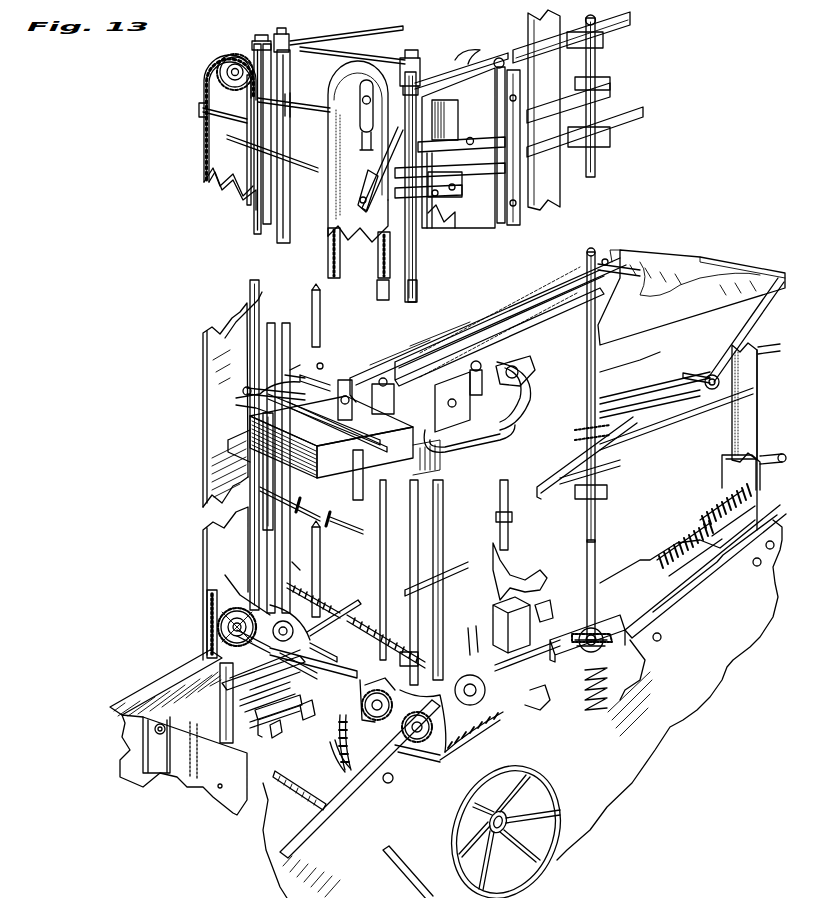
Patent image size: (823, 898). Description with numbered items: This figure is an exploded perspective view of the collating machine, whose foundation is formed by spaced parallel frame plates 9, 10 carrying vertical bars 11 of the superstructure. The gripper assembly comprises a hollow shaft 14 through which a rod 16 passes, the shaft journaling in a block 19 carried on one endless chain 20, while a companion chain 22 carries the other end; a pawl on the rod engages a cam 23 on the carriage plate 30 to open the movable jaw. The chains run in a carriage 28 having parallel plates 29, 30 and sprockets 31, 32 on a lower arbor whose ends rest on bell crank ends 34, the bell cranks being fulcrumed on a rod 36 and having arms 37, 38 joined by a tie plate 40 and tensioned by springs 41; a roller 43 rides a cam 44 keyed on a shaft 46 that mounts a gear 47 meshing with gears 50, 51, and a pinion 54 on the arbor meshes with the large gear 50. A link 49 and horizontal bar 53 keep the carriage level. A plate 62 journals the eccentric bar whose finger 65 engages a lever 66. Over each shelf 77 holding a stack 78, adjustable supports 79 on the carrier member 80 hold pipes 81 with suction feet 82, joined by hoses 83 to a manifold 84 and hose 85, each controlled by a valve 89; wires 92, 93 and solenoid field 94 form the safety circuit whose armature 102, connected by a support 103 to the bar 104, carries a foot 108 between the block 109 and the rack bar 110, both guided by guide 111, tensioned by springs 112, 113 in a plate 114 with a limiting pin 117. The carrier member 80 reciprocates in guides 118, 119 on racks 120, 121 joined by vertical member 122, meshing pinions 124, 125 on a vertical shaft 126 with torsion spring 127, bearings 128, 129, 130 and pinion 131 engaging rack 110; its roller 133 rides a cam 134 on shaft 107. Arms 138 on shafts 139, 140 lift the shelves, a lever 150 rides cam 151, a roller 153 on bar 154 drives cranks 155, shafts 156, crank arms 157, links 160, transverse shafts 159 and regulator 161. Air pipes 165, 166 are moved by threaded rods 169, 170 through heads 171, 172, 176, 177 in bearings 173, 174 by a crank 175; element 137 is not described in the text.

The frame plate 9 is at (678, 712).
The frame plate 10 is at (124, 756).
The vertical bar 11 is at (556, 18).
The hollow shaft 14 is at (292, 136).
The rod 16 is at (302, 502).
The block 19 is at (200, 113).
The endless chain 20 is at (342, 272).
The companion chain 22 is at (220, 186).
The cam 23 is at (206, 640).
The carriage 28 is at (203, 365).
The carriage plate 29 is at (352, 78).
The carriage plate 30 is at (222, 336).
The sprocket 31 is at (346, 672).
The sprocket 32 is at (212, 78).
The bell crank end 34 is at (383, 678).
The rod 36 is at (250, 700).
The bell crank arm 37 is at (418, 712).
The bell crank arm 38 is at (220, 620).
The tie plate 40 is at (256, 642).
The spring 41 is at (248, 708).
The roller 43 is at (283, 620).
The cam 44 is at (328, 708).
The shaft 46 is at (322, 655).
The gear 47 is at (420, 778).
The link 49 is at (341, 243).
The large gear 50 is at (342, 780).
The gear 51 is at (490, 728).
The horizontal bar 53 is at (370, 200).
The pinion 54 is at (372, 145).
The plate 62 is at (305, 755).
The finger 65 is at (300, 700).
The lever 66 is at (280, 780).
The shelf 77 is at (666, 266).
The stack of sheets 78 is at (378, 358).
The adjustable support 79 is at (448, 430).
The carrier member 80 is at (460, 450).
The pipe 81 is at (370, 436).
The suction foot 82 is at (318, 426).
The flexible hose section 83 is at (510, 425).
The suction line manifold 84 is at (497, 95).
The flexible hose 85 is at (528, 570).
The valve 89 is at (240, 398).
The wire 92 is at (300, 392).
The wire 93 is at (248, 413).
The solenoid field 94 is at (500, 604).
The solenoid armature 102 is at (542, 611).
The support 103 is at (476, 648).
The bar 104 is at (624, 574).
The shaft 107 is at (370, 690).
The foot 108 is at (522, 680).
The block 109 is at (520, 706).
The rack bar 110 is at (562, 656).
The guide 111 is at (582, 600).
The spring 112 is at (680, 530).
The spring 113 is at (712, 498).
The plate 114 is at (720, 462).
The pin 117 is at (764, 458).
The guide 118 is at (462, 180).
The guide 119 is at (466, 136).
The horizontal rack 120 is at (560, 478).
The horizontal rack 121 is at (536, 110).
The vertical member 122 is at (527, 70).
The pinion 124 is at (582, 428).
The pinion 125 is at (600, 80).
The vertical shaft 126 is at (596, 162).
The torsion spring 127 is at (600, 660).
The upper bearing 128 is at (604, 40).
The intermediate bearing 129 is at (608, 490).
The lower bearing 130 is at (632, 656).
The pinion 131 is at (584, 630).
The roller 133 is at (452, 680).
The cam 134 is at (410, 690).
The block 137 is at (265, 418).
The arm 138 is at (604, 270).
The shaft 139 is at (694, 372).
The shaft 140 is at (650, 378).
The horizontal lever 150 is at (348, 600).
The cam 151 is at (320, 640).
The roller 153 is at (306, 590).
The bar 154 is at (320, 296).
The crank 155 is at (302, 366).
The horizontal shaft 156 is at (328, 378).
The crank arm 157 is at (376, 386).
The transverse shaft 159 is at (434, 350).
The link 160 is at (384, 376).
The regulator 161 is at (480, 374).
The air pipe 165 is at (292, 202).
The air pipe 166 is at (418, 250).
The threaded rod 169 is at (325, 38).
The threaded rod 170 is at (390, 630).
The head 171 is at (287, 36).
The head 172 is at (400, 58).
The bearing 173 is at (264, 36).
The bearing 174 is at (418, 62).
The crank 175 is at (468, 56).
The head 176 is at (304, 559).
The head 177 is at (406, 650).